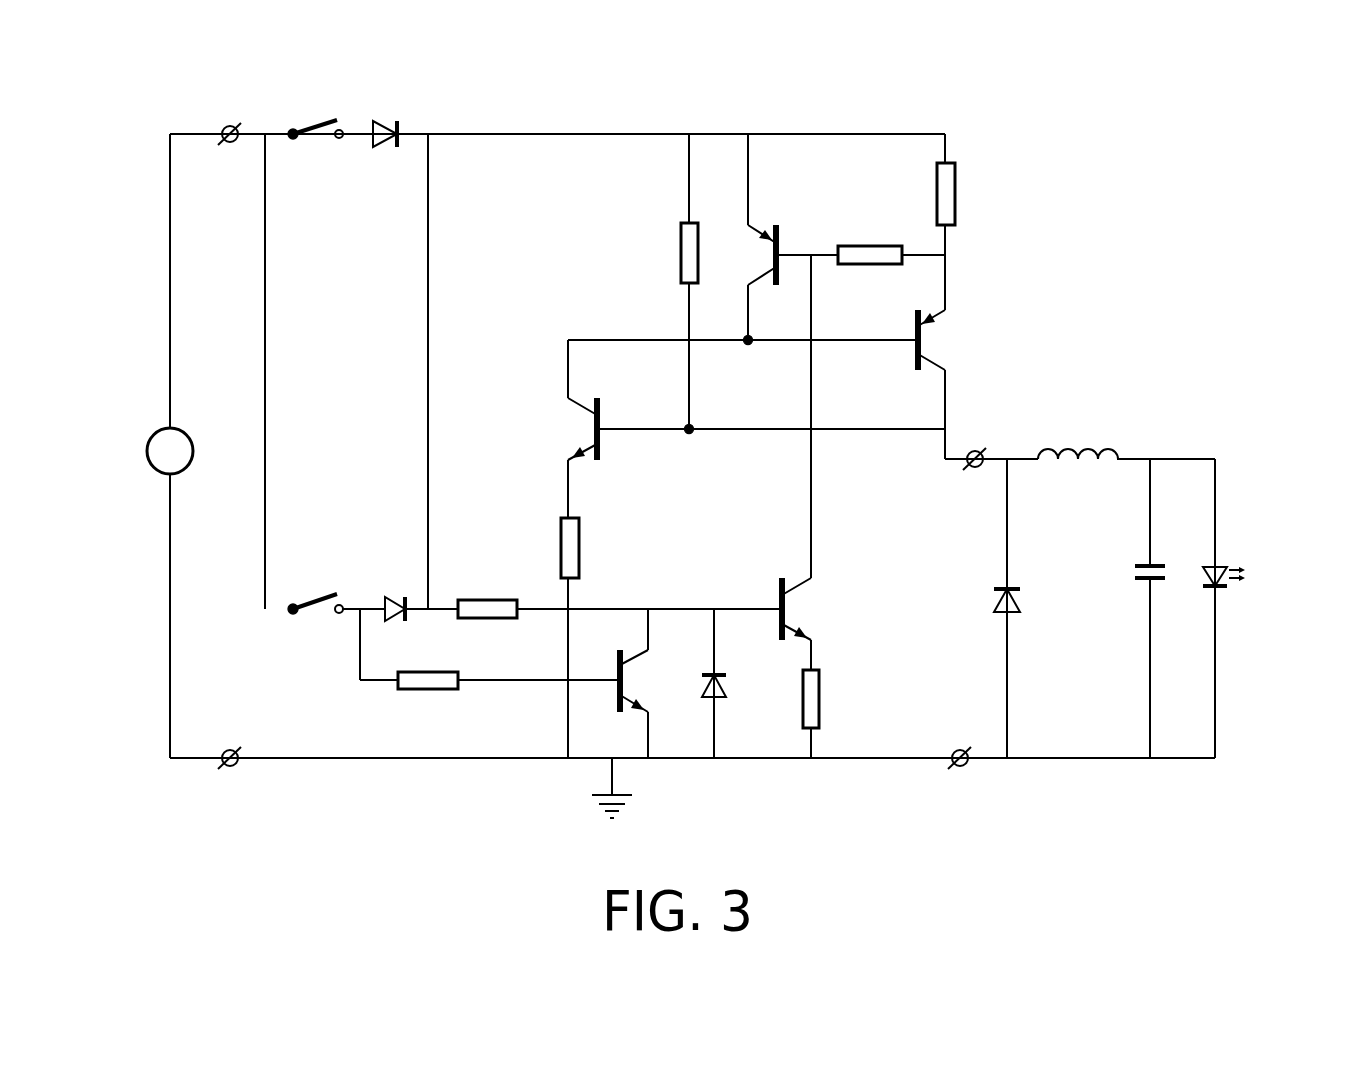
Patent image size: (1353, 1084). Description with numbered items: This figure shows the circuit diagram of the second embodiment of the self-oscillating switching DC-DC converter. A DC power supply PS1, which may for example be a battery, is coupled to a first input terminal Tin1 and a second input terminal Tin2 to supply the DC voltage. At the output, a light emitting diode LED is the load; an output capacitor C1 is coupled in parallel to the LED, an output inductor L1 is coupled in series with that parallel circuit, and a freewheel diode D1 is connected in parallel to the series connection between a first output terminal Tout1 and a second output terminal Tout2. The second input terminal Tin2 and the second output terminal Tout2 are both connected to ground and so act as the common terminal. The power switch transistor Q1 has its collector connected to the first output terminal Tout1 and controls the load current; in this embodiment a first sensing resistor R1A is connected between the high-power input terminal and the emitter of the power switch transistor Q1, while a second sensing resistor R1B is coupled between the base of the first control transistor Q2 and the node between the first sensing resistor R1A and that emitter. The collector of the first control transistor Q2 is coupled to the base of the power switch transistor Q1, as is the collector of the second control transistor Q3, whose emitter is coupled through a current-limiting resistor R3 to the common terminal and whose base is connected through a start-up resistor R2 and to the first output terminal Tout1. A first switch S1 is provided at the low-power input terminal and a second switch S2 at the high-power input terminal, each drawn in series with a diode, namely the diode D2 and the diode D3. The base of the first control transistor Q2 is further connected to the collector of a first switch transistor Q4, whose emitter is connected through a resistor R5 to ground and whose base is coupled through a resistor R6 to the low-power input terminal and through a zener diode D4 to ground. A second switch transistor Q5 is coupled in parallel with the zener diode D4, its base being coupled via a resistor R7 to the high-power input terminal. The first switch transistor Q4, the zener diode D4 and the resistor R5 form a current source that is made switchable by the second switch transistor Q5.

The first input terminal Tin1 is at (225, 127).
The second input terminal Tin2 is at (230, 767).
The first output terminal Tout1 is at (979, 451).
The second output terminal Tout2 is at (960, 767).
The first switch S1 is at (315, 588).
The second switch S2 is at (315, 112).
The freewheel diode D1 is at (1030, 602).
The diode D2 is at (397, 591).
The diode D3 is at (389, 116).
The zener diode D4 is at (737, 686).
The first sensing resistor R1A is at (977, 194).
The second sensing resistor R1B is at (870, 238).
The start-up resistor R2 is at (669, 253).
The current-limiting resistor R3 is at (550, 548).
The resistor R5 is at (832, 699).
The resistor R6 is at (487, 590).
The resistor R7 is at (428, 699).
The power switch transistor Q1 is at (947, 340).
The first control transistor Q2 is at (750, 255).
The second control transistor Q3 is at (570, 429).
The first switch transistor Q4 is at (813, 609).
The second switch transistor Q5 is at (650, 681).
The output inductor L1 is at (1096, 450).
The output capacitor C1 is at (1131, 572).
The light emitting diode LED is at (1242, 593).
The DC power supply PS1 is at (194, 451).